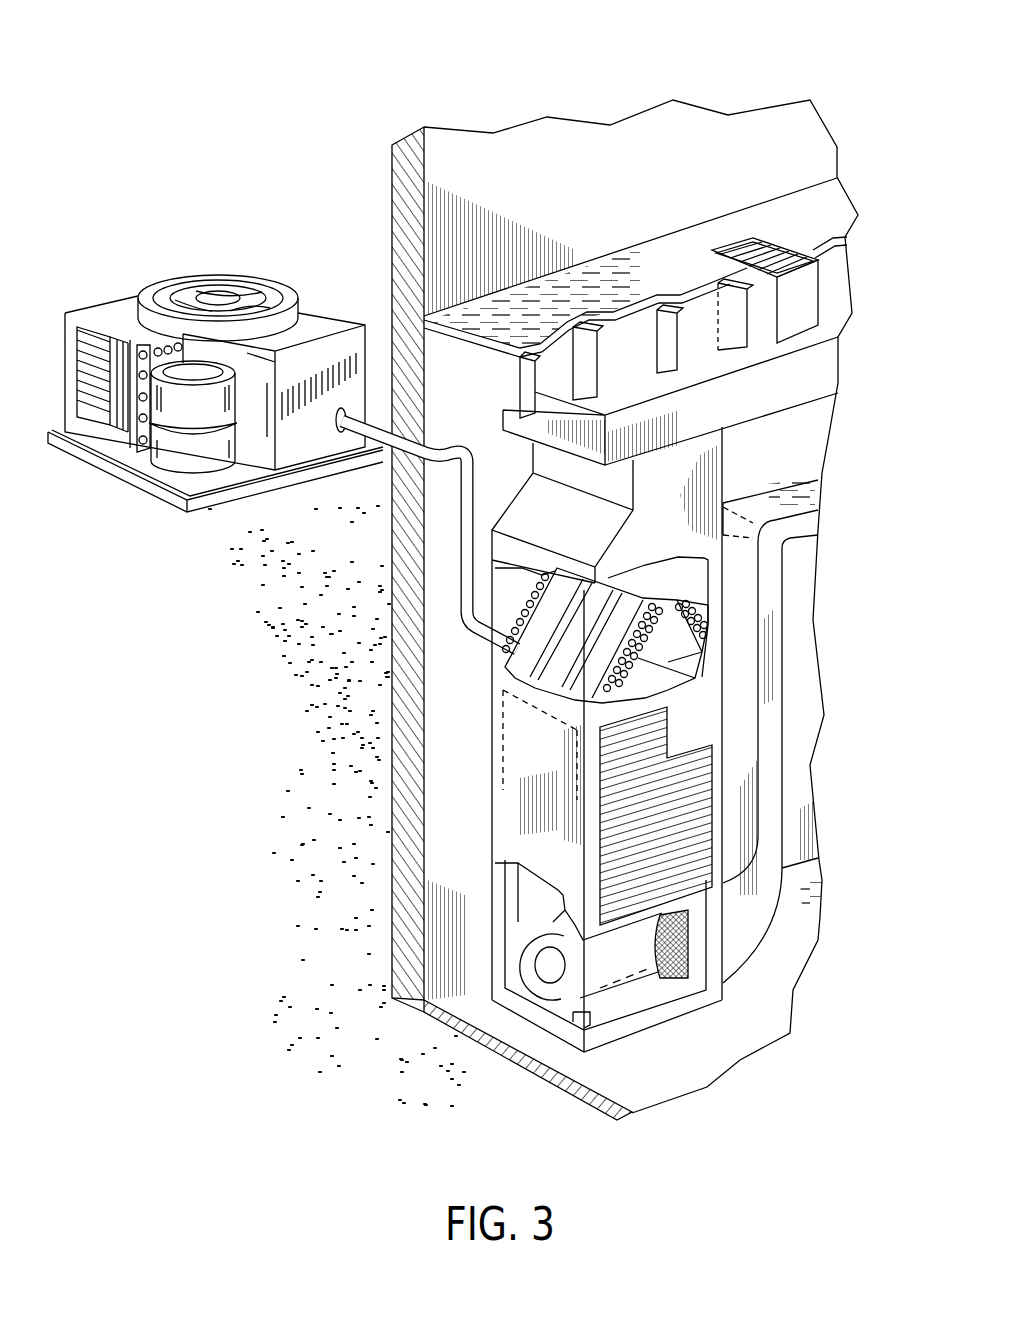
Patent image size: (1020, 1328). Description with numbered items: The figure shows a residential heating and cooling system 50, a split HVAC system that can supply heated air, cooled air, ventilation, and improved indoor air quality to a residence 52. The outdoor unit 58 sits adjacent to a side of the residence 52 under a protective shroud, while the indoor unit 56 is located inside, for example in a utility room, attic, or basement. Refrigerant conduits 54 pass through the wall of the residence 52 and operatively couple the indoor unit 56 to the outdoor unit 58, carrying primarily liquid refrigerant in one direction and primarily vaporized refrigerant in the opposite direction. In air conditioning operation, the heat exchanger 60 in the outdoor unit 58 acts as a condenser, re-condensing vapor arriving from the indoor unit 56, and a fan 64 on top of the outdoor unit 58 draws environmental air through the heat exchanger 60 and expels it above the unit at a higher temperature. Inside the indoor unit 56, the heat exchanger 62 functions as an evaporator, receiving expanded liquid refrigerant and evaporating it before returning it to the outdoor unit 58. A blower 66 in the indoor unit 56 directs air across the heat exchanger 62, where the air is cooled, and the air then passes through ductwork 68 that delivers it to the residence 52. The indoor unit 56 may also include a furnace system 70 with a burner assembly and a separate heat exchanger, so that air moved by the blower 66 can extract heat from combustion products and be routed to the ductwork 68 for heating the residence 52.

The residential heating and cooling system 50 is at (211, 90).
The residence 52 is at (530, 148).
The refrigerant conduits 54 is at (460, 540).
The indoor unit 56 is at (462, 798).
The outdoor unit 58 is at (170, 263).
The heat exchanger 60 is at (140, 350).
The heat exchanger 62 is at (555, 662).
The fan 64 is at (236, 277).
The blower 66 is at (543, 987).
The ductwork 68 is at (790, 318).
The furnace system 70 is at (503, 778).